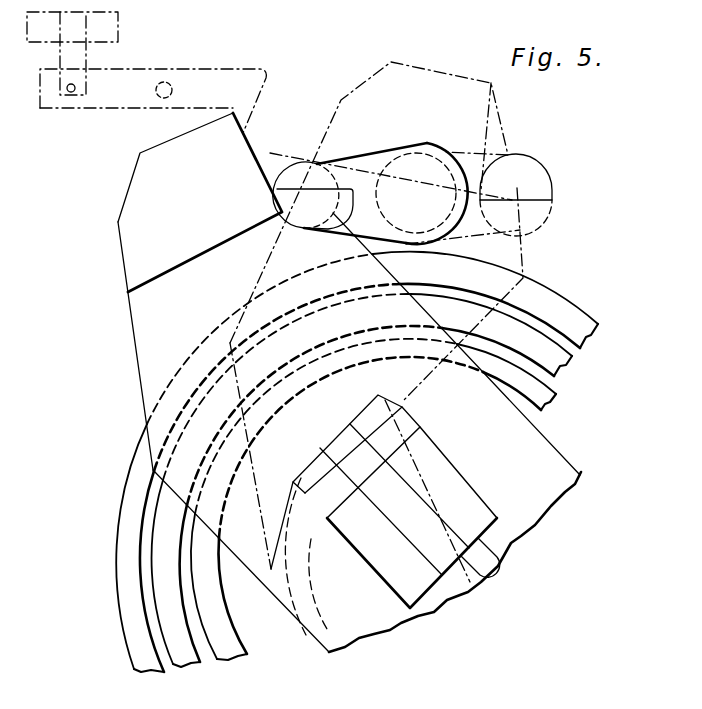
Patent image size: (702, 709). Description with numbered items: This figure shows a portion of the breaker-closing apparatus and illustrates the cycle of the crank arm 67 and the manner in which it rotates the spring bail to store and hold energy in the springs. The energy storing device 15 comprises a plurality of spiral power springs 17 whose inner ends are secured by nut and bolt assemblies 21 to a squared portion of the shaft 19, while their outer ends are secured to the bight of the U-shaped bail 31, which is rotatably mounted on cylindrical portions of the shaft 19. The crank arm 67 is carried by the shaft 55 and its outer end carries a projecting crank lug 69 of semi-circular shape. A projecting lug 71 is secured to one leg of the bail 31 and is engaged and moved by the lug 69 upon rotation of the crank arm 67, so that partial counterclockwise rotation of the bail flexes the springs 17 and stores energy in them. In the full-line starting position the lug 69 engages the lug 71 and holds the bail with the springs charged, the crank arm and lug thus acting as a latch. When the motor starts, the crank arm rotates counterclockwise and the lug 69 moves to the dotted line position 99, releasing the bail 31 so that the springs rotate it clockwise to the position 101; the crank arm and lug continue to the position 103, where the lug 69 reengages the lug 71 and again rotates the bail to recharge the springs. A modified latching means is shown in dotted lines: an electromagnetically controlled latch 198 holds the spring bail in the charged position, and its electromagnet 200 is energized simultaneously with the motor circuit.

The energy storing device 15 is at (113, 431).
The spiral power springs 17 is at (118, 539).
The shaft 19 is at (465, 481).
The nut and bolt assemblies 21 is at (493, 554).
The U-shaped bail 31 is at (137, 357).
The shaft 55 is at (433, 163).
The crank arm 67 is at (368, 148).
The crank lug 69 is at (308, 190).
The projecting lug 71 is at (138, 180).
The dotted line position 99 is at (345, 225).
The position 101 is at (421, 68).
The position 103 is at (550, 183).
The electromagnetically controlled latch 198 is at (188, 68).
The electromagnet 200 is at (118, 22).